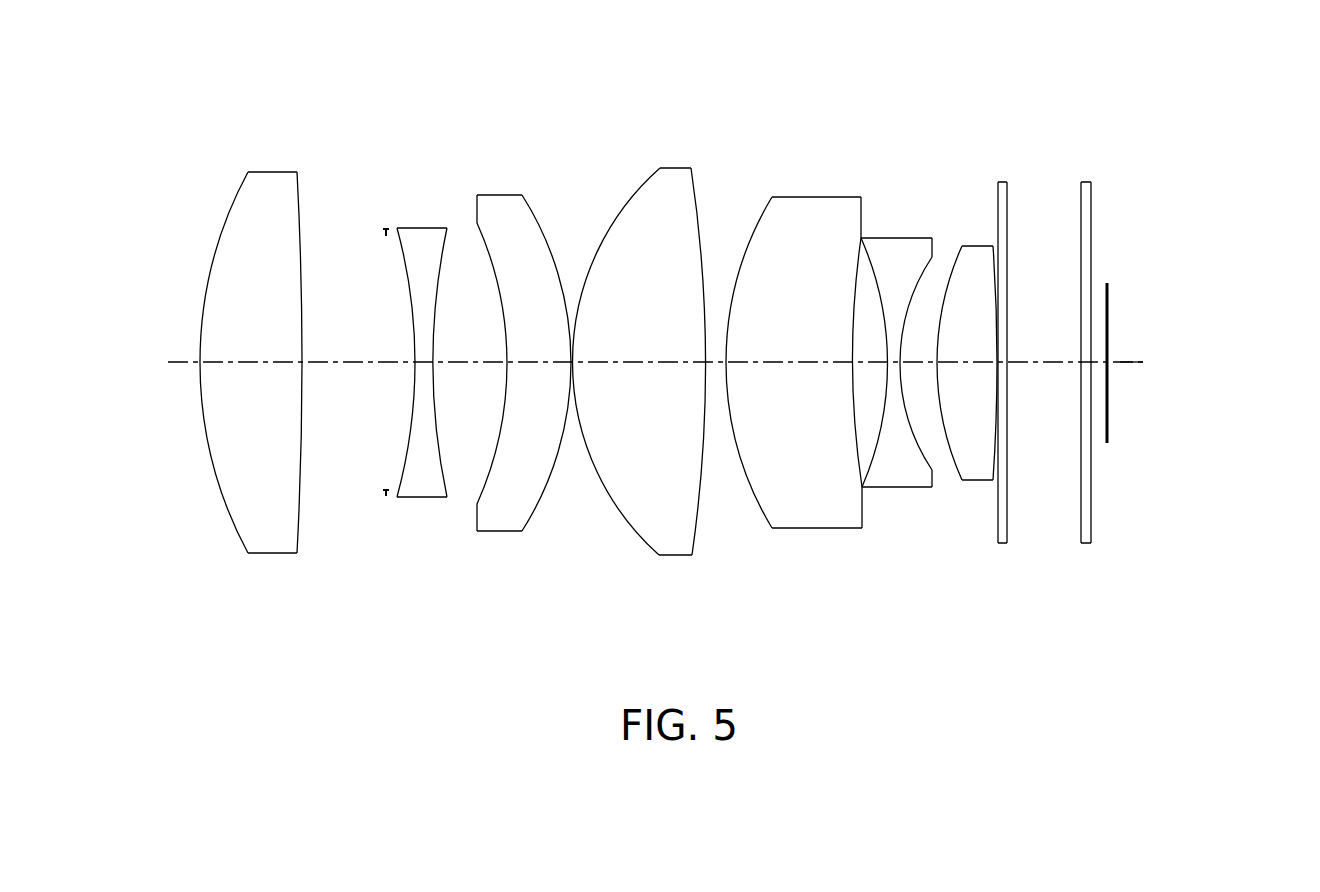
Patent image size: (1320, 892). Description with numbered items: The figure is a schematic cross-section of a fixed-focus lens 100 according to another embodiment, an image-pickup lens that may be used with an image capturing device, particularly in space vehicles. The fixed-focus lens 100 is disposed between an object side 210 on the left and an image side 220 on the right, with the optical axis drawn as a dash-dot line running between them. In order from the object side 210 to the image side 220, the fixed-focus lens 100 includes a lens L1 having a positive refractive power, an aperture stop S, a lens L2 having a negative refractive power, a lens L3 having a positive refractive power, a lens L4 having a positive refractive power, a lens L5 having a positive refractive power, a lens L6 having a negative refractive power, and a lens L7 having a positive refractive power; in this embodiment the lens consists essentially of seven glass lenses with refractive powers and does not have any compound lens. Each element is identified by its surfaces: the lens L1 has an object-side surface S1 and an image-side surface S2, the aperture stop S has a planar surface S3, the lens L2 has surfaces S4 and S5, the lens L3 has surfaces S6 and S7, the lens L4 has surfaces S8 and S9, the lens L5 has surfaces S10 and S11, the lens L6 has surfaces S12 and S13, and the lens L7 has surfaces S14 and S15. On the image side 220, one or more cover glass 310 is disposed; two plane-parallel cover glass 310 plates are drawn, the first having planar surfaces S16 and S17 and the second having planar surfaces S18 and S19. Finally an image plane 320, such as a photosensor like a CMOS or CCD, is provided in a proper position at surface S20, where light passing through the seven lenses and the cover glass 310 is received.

The fixed-focus lens 100 is at (176, 26).
The object side 210 is at (113, 372).
The image side 220 is at (1226, 373).
The first lens L1 is at (268, 177).
The second lens L2 is at (420, 233).
The third lens L3 is at (500, 200).
The fourth lens L4 is at (673, 172).
The fifth lens L5 is at (812, 202).
The sixth lens L6 is at (895, 243).
The seventh lens L7 is at (973, 248).
The aperture stop S is at (386, 233).
The cover glass 310 is at (1003, 183).
The image plane 320 is at (1108, 300).
The object-side surface of lens L1 S1 is at (237, 530).
The image-side surface of lens L1 S2 is at (300, 507).
The aperture stop surface S3 is at (387, 490).
The object-side surface of lens L2 S4 is at (402, 470).
The image-side surface of lens L2 S5 is at (440, 473).
The object-side surface of lens L3 S6 is at (483, 492).
The image-side surface of lens L3 S7 is at (538, 503).
The object-side surface of lens L4 S8 is at (623, 517).
The image-side surface of lens L4 S9 is at (695, 517).
The object-side surface of lens L5 S10 is at (760, 513).
The image-side surface of lens L5 S11 is at (862, 480).
The object-side surface of lens L6 S12 is at (872, 463).
The image-side surface of lens L6 S13 is at (928, 462).
The object-side surface of lens L7 S14 is at (955, 472).
The image-side surface of lens L7 S15 is at (983, 477).
The object-side surface of first cover glass S16 is at (993, 537).
The image-side surface of first cover glass S17 is at (1008, 505).
The object-side surface of second cover glass S18 is at (1080, 527).
The image-side surface of second cover glass S19 is at (1092, 485).
The image plane surface S20 is at (1107, 407).